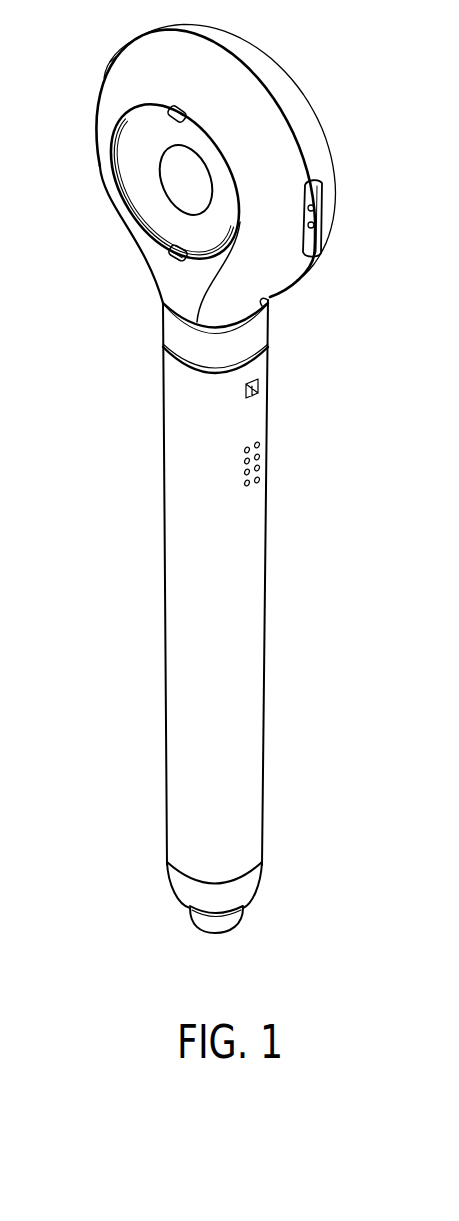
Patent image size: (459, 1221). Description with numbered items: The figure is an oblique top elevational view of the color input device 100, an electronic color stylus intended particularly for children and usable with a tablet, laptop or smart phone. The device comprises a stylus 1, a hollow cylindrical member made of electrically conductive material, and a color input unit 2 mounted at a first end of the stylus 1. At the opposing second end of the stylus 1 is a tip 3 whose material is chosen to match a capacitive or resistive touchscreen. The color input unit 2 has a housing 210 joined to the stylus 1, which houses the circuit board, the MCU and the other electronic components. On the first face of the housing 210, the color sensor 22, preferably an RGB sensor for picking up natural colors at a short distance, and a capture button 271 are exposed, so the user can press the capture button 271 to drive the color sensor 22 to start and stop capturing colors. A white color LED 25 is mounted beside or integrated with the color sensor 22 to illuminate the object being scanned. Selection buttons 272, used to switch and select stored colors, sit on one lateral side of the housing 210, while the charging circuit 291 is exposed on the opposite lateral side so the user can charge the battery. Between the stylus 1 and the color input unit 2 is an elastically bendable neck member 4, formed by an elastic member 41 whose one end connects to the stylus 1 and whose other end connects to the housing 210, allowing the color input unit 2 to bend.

The stylus 1 is at (268, 540).
The color input device 100 is at (270, 595).
The color input unit 2 is at (253, 43).
The housing 210 is at (267, 122).
The color sensor 22 is at (178, 182).
The white color LED 25 is at (161, 160).
The capture button 271 is at (168, 109).
The selection button 272 is at (117, 52).
The charging circuit 291 is at (322, 208).
The tip 3 is at (198, 920).
The neck member 4 is at (270, 317).
The elastic member 41 is at (257, 337).